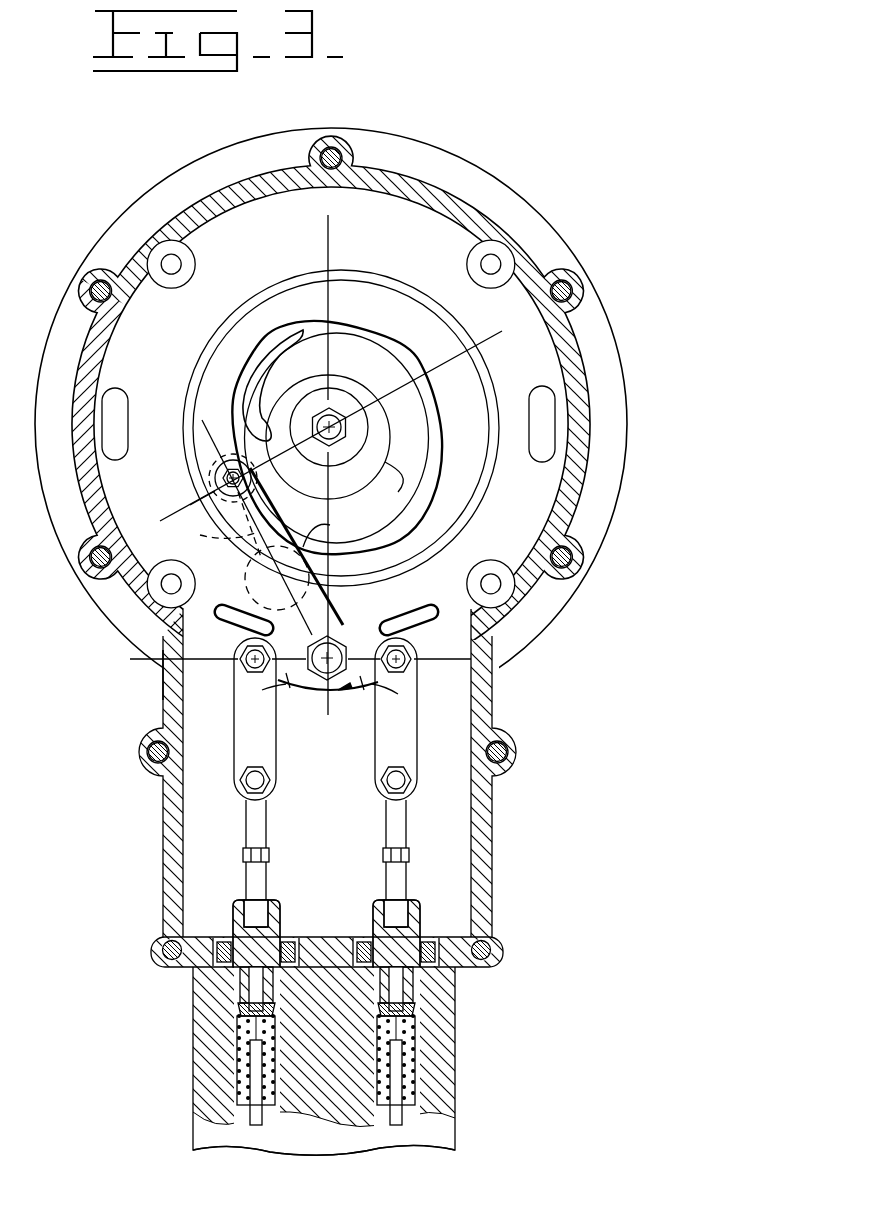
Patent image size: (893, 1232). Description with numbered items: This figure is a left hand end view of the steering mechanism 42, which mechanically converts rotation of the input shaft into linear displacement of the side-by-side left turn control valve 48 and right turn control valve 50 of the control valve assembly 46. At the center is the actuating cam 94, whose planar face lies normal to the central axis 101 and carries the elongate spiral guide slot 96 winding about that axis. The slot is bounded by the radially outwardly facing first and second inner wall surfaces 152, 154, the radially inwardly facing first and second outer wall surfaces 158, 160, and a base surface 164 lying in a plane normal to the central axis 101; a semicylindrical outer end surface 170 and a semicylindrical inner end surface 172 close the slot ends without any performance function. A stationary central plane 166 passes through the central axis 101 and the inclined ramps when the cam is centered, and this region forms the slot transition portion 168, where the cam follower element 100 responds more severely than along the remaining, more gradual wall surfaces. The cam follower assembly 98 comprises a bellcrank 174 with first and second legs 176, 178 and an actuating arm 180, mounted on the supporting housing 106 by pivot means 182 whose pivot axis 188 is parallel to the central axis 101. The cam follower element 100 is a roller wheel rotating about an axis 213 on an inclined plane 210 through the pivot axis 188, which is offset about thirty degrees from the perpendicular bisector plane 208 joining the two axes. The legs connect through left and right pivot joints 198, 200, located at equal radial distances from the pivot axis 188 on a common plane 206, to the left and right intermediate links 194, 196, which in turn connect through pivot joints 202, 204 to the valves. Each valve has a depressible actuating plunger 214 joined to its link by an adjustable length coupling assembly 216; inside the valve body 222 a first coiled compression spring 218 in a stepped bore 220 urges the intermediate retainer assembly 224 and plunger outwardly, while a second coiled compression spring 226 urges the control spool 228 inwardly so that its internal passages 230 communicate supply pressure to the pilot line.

The steering mechanism 42 is at (533, 186).
The actuating cam 94 is at (292, 272).
The guide slot 96 is at (228, 338).
The perpendicular bisector plane 208 is at (343, 268).
The stationary central plane 166 is at (498, 335).
The slot transition portion 168 is at (197, 498).
The first inner wall surface 152 is at (238, 370).
The first outer wall surface 158 is at (207, 395).
The semicylindrical inner end surface 172 is at (270, 386).
The central axis 101 is at (340, 436).
The second inner wall surface 154 is at (392, 478).
The second outer wall surface 160 is at (318, 536).
The cam follower element 100 is at (226, 464).
The axis 213 is at (250, 479).
The bellcrank 174 is at (316, 582).
The inclined plane 210 is at (233, 538).
The actuating arm 180 is at (258, 562).
The semicylindrical outer end surface 170 is at (260, 582).
The central axis 188 is at (330, 637).
The pivot means 182 is at (327, 693).
The cam follower assembly 98 is at (422, 720).
The left intermediate link 194 is at (256, 740).
The right intermediate link 196 is at (393, 740).
The left pivot joint 198 is at (249, 655).
The right pivot joint 200 is at (408, 657).
The pivot joint 202 is at (256, 785).
The pivot joint 204 is at (393, 785).
The first leg 176 is at (263, 690).
The second leg 178 is at (404, 699).
The base surface 164 is at (455, 502).
The supporting housing 106 is at (148, 624).
The common plane 206 is at (165, 662).
The control valve assembly 46 is at (173, 987).
The internal passages 230 is at (455, 1145).
The actuating plunger 214 is at (254, 891).
The adjustable length coupling assembly 216 is at (383, 855).
The valve body 222 is at (445, 985).
The right turn control valve 50 is at (462, 1034).
The left turn control valve 48 is at (228, 1011).
The intermediate retainer assembly 224 is at (414, 1012).
The stepped bore 220 is at (242, 1078).
The second coiled compression spring 226 is at (418, 1082).
The control spool 228 is at (258, 1068).
The first coiled compression spring 218 is at (410, 1100).